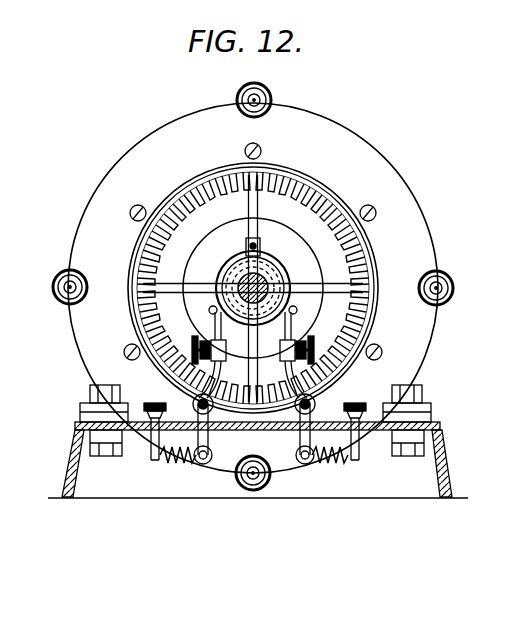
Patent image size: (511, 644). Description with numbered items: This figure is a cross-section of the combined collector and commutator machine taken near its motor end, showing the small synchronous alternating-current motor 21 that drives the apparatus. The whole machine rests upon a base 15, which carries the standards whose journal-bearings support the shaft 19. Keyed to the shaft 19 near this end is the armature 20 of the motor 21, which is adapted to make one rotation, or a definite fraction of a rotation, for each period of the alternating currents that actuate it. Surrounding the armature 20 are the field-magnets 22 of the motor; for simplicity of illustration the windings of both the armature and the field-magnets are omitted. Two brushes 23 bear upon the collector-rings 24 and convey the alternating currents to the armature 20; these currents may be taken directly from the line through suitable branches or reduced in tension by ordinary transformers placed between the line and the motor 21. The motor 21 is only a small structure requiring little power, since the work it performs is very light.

The base 15 is at (265, 441).
The shaft 19 is at (242, 279).
The armature 20 is at (253, 288).
The alternating-current motor 21 is at (253, 286).
The field-magnets 22 is at (289, 169).
The brushes 23 is at (213, 313).
The collector-rings 24 is at (272, 278).